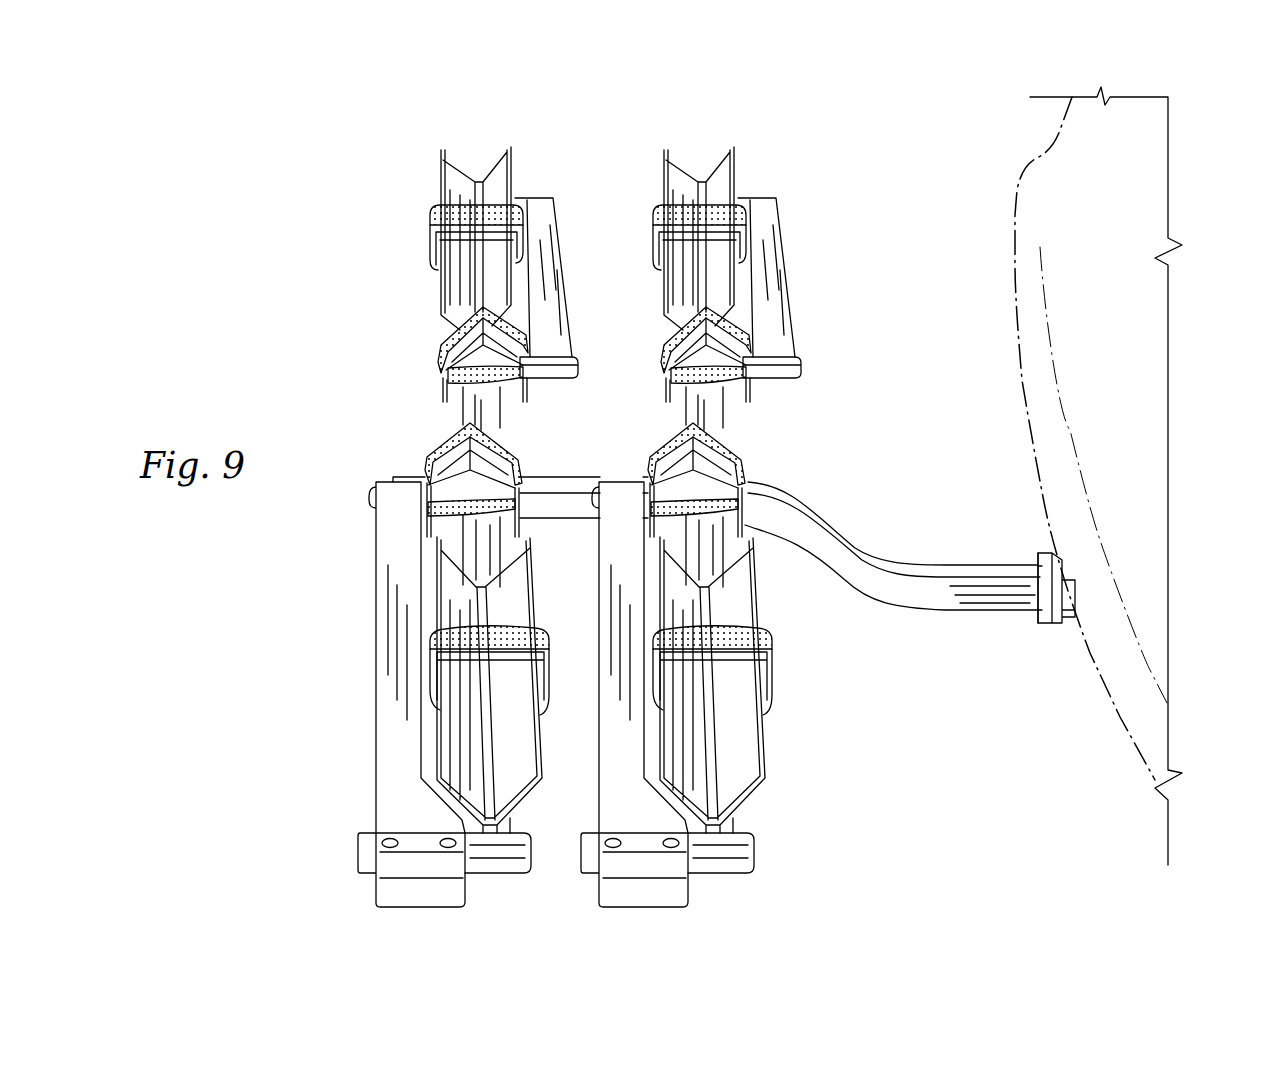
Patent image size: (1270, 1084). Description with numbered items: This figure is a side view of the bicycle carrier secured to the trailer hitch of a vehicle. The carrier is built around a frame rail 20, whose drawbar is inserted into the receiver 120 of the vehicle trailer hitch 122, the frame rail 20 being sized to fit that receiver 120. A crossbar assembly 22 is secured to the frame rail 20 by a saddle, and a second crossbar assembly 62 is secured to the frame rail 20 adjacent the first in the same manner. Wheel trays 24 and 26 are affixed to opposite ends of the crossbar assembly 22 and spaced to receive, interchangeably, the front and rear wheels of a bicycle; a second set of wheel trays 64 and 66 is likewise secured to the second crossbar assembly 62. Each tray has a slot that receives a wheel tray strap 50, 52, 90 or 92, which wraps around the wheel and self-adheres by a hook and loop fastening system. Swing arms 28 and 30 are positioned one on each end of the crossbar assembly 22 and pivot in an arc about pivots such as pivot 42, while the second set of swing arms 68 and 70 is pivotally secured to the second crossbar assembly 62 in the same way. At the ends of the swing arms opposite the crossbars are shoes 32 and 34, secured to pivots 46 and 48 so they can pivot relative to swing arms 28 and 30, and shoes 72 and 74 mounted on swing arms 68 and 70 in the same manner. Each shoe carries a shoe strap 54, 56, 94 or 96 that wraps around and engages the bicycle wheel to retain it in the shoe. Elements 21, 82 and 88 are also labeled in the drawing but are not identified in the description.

The frame rail 20 is at (865, 550).
The tube end 21 is at (1043, 607).
The crossbar assembly 22 is at (713, 407).
The wheel tray 24 is at (770, 747).
The wheel tray 26 is at (737, 172).
The swing arm 28 is at (598, 750).
The swing arm 30 is at (783, 257).
The shoe 32 is at (747, 468).
The shoe 34 is at (748, 395).
The pivot 42 is at (753, 853).
The pivot 46 is at (580, 487).
The pivot 48 is at (800, 367).
The wheel tray strap 50 is at (767, 643).
The wheel tray strap 52 is at (653, 221).
The shoe strap 54 is at (663, 453).
The shoe strap 56 is at (670, 338).
The second crossbar assembly 62 is at (463, 413).
The wheel tray 64 is at (544, 757).
The wheel tray 66 is at (440, 168).
The swing arm 68 is at (376, 667).
The swing arm 70 is at (560, 231).
The shoe 72 is at (527, 536).
The shoe 74 is at (440, 398).
The cylindrical mount 82 is at (527, 857).
The bracket foot 88 is at (588, 370).
The wheel tray strap 90 is at (544, 637).
The wheel tray strap 92 is at (432, 214).
The shoe strap 94 is at (423, 471).
The shoe strap 96 is at (441, 339).
The receiver 120 is at (1062, 623).
The vehicle trailer hitch 122 is at (1070, 610).